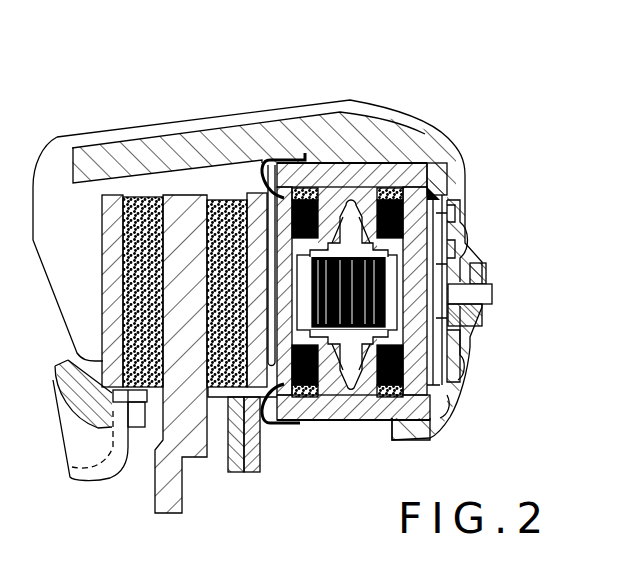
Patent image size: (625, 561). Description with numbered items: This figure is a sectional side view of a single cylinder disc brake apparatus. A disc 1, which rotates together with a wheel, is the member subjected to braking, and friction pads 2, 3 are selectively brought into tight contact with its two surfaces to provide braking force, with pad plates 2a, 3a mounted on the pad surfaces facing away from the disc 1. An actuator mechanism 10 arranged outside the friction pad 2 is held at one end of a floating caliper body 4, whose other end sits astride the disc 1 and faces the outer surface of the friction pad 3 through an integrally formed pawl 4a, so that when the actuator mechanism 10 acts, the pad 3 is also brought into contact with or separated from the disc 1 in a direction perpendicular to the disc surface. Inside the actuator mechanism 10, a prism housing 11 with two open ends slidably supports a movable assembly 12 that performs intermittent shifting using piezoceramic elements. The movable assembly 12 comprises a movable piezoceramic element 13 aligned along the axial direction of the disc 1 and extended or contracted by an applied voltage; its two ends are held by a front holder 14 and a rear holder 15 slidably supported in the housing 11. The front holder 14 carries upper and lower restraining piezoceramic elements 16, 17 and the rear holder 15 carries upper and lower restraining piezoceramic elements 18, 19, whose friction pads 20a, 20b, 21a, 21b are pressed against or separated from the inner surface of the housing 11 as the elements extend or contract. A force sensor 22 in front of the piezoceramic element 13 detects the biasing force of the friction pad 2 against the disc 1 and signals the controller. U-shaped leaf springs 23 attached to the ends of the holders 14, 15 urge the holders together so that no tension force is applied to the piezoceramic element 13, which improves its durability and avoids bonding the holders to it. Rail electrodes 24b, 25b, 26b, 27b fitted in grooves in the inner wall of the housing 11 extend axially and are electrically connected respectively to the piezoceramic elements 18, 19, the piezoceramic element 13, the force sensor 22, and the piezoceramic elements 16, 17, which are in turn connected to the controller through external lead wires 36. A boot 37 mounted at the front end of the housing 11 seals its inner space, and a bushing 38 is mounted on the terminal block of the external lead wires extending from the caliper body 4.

The disc 1 is at (182, 210).
The friction pad 2 is at (224, 205).
The pad plate 2a is at (257, 200).
The friction pad 3 is at (143, 200).
The pad plate 3a is at (119, 195).
The caliper body 4 is at (377, 127).
The pawl 4a is at (58, 283).
The actuator mechanism 10 is at (338, 426).
The prism housing 11 is at (441, 187).
The movable assembly 12 is at (433, 200).
The movable piezoceramic element 13 is at (447, 347).
The front holder 14 is at (298, 188).
The rear holder 15 is at (447, 238).
The upper restraining piezoceramic element 16 is at (349, 195).
The lower restraining piezoceramic element 17 is at (313, 420).
The upper restraining piezoceramic element 18 is at (441, 214).
The lower restraining piezoceramic element 19 is at (410, 417).
The friction pad 20a is at (304, 192).
The friction pad 20b is at (305, 410).
The friction pad 21a is at (408, 168).
The friction pad 21b is at (394, 418).
The force sensor 22 is at (294, 420).
The U-shaped leaf spring 23 is at (393, 172).
The rail electrode 24b is at (446, 200).
The rail electrode 25b is at (448, 248).
The rail electrode 26b is at (463, 343).
The rail electrode 27b is at (443, 402).
The external lead wire 36 is at (492, 293).
The boot 37 is at (283, 163).
The bushing 38 is at (485, 265).